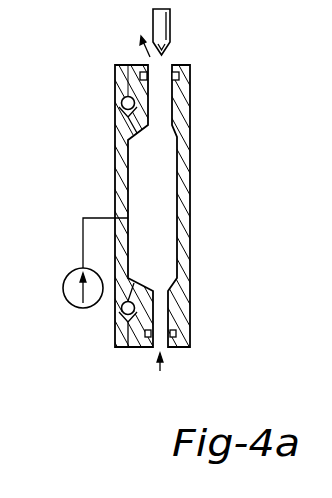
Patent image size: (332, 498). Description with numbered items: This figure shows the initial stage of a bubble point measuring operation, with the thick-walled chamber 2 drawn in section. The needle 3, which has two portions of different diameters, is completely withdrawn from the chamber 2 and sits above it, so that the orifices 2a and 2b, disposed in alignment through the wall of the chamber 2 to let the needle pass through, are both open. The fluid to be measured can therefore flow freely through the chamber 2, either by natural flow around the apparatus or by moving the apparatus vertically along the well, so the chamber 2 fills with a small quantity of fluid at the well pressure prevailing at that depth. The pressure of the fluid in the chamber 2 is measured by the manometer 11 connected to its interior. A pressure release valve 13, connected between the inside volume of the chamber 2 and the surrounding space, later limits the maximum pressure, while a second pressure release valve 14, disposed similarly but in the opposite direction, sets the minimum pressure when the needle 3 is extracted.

The chamber 2 is at (157, 170).
The orifice 2a is at (160, 104).
The orifice 2b is at (160, 309).
The needle 3 is at (173, 28).
The manometer 11 is at (63, 300).
The pressure release valve 13 is at (121, 104).
The second pressure release valve 14 is at (121, 316).